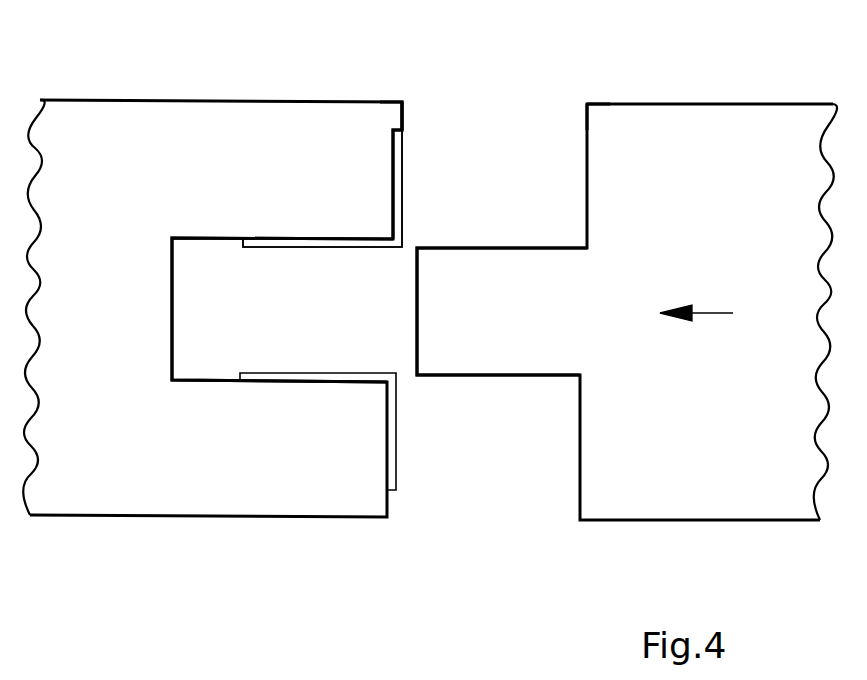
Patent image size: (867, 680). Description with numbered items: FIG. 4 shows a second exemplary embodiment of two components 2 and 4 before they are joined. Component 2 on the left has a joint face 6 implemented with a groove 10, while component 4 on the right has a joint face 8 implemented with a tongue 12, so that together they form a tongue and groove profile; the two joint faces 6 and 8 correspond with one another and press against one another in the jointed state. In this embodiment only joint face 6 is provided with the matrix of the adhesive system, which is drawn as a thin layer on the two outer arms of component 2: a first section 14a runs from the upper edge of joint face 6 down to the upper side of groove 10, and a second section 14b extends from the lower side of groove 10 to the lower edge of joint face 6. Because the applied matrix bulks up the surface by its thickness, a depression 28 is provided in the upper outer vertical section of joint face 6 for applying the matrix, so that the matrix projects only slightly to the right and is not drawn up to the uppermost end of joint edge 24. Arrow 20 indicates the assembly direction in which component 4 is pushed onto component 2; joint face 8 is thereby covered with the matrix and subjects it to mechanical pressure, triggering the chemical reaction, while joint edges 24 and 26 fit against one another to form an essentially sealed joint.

The component 2 is at (88, 128).
The component 4 is at (740, 133).
The joint face 6 is at (420, 144).
The joint face 8 is at (565, 146).
The groove 10 is at (193, 280).
The tongue 12 is at (541, 284).
The first section of matrix 14a is at (401, 205).
The second section of matrix 14b is at (393, 433).
The arrow 20 is at (708, 313).
The joint edge 24 is at (403, 114).
The joint edge 26 is at (586, 114).
The depression 28 is at (393, 152).